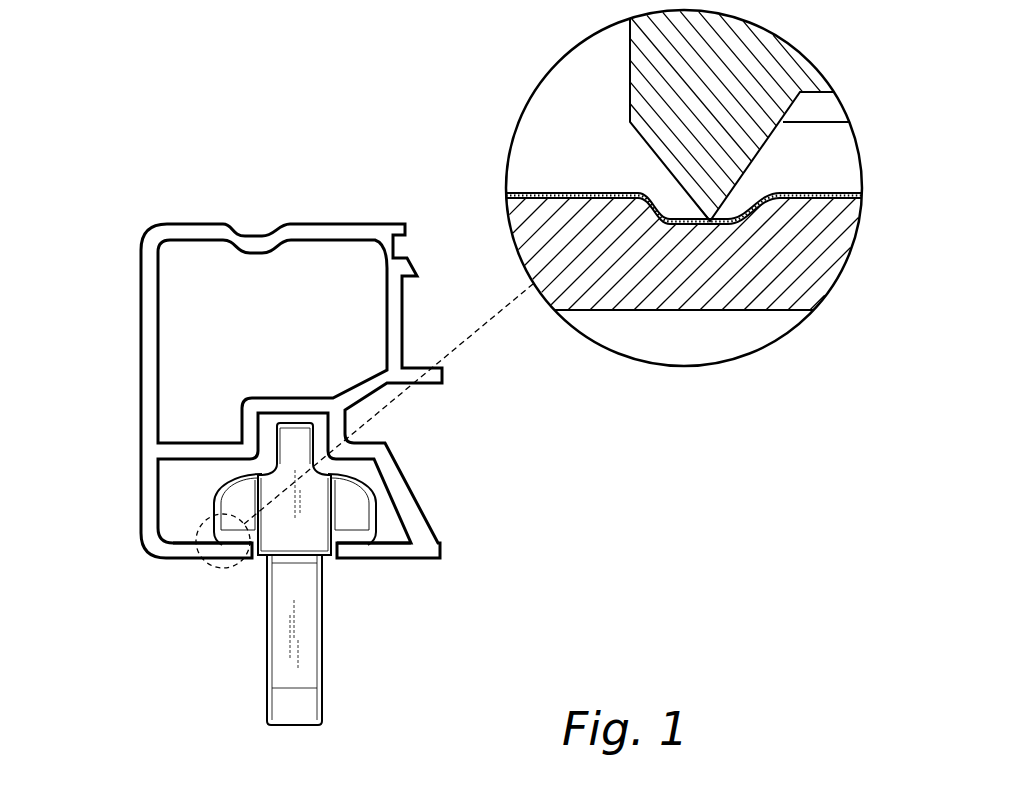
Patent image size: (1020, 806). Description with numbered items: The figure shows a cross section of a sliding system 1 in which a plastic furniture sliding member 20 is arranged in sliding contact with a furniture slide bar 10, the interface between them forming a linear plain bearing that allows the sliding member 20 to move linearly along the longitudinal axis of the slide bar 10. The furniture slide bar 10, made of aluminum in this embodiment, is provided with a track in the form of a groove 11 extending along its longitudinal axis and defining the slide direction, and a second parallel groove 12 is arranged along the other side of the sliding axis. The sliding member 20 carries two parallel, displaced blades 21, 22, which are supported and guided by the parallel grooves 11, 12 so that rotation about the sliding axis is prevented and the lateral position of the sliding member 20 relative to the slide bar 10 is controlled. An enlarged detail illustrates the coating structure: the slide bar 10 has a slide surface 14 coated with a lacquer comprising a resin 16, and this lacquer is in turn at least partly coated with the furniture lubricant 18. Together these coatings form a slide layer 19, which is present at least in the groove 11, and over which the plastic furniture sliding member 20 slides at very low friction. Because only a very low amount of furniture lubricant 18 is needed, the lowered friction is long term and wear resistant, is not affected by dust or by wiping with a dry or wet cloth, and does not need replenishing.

The sliding system 1 is at (92, 168).
The furniture slide bar 10 is at (345, 223).
The groove 11 is at (236, 532).
The groove 12 is at (352, 525).
The slide surface 14 is at (737, 230).
The resin 16 is at (835, 198).
The furniture lubricant 18 is at (800, 194).
The slide layer 19 is at (615, 152).
The plastic furniture sliding member 20 is at (322, 697).
The blade 21 is at (238, 530).
The blade 22 is at (362, 540).